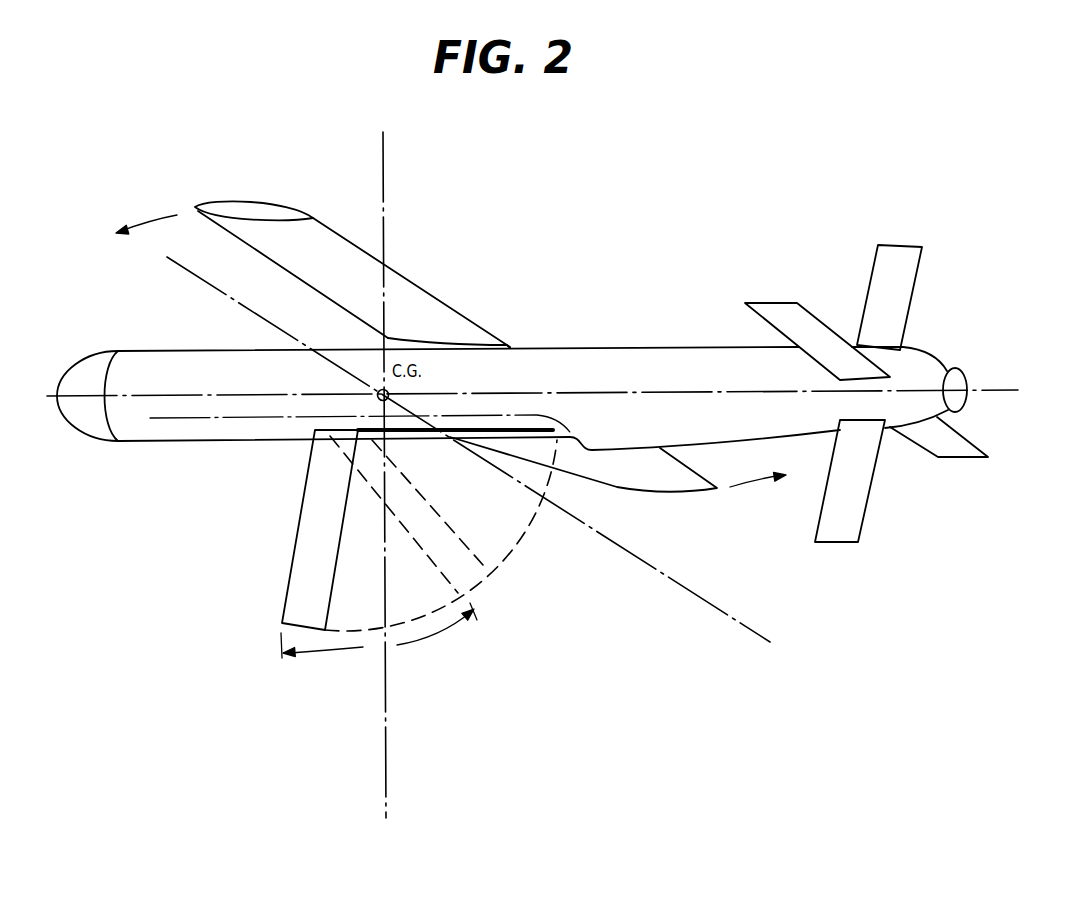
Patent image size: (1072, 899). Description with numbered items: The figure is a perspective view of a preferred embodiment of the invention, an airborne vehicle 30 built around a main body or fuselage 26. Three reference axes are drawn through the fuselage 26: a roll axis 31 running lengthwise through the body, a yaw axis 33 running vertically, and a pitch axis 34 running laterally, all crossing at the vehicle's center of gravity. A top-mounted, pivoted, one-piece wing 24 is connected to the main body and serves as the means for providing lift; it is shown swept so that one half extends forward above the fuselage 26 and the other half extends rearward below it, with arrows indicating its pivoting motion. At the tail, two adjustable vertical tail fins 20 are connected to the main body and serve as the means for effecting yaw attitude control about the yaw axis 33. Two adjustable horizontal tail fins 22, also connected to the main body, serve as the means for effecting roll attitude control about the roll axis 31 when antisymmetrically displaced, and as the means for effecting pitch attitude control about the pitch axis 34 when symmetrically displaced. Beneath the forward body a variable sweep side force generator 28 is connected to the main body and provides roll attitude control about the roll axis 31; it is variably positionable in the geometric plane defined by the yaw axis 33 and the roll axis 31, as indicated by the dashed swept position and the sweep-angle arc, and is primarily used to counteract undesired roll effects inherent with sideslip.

The adjustable vertical tail fins 20 is at (895, 288).
The adjustable horizontal tail fins 22 is at (818, 335).
The top-mounted pivoted one-piece wing 24 is at (396, 297).
The main body or fuselage 26 is at (234, 372).
The variable sweep side force generator 28 is at (315, 542).
The airborne vehicle 30 is at (697, 245).
The roll axis 31 is at (538, 383).
The yaw axis 33 is at (388, 206).
The pitch axis 34 is at (484, 460).